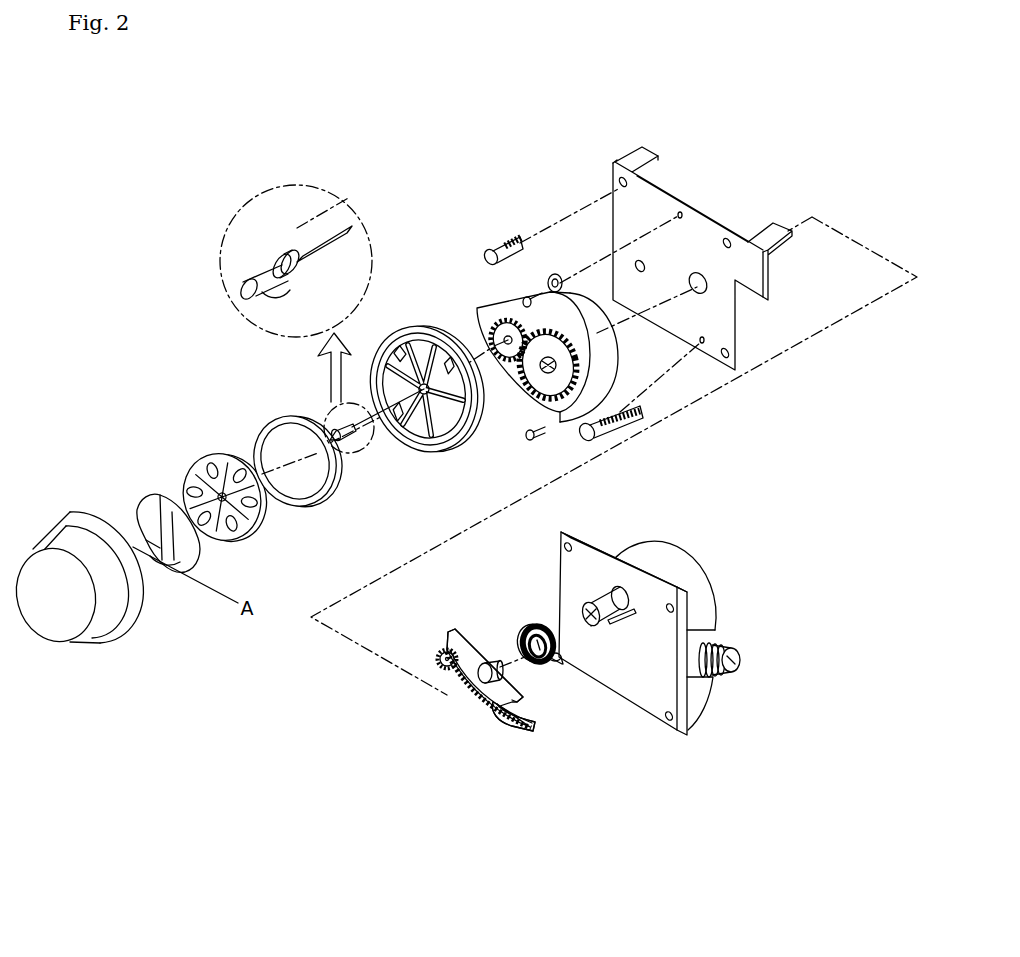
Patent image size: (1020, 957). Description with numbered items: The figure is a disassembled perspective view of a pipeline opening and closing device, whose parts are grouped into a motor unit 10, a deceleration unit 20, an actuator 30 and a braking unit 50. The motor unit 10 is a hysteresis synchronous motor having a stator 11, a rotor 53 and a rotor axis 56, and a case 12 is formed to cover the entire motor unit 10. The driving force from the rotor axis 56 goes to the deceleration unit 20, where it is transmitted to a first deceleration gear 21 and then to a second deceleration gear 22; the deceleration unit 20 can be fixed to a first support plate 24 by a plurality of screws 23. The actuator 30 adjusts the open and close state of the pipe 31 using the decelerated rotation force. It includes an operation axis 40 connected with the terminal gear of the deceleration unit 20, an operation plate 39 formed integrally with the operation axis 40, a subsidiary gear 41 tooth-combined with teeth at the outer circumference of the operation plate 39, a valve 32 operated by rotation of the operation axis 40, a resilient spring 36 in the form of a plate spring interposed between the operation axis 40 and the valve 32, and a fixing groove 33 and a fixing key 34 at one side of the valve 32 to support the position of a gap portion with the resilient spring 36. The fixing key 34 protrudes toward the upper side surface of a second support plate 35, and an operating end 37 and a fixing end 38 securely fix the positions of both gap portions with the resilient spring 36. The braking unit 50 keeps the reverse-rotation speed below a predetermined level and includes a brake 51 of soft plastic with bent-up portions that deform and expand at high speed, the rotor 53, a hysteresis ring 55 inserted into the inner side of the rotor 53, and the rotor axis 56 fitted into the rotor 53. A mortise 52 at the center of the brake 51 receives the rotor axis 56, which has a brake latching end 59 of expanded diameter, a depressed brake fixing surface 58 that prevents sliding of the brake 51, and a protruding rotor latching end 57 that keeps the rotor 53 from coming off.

The motor unit 10 is at (427, 362).
The stator 11 is at (449, 448).
The case 12 is at (64, 628).
The deceleration unit 20 is at (620, 294).
The first deceleration gear 21 is at (483, 311).
The second deceleration gear 22 is at (560, 392).
The screws 23 is at (502, 248).
The first support plate 24 is at (633, 160).
The actuator 30 is at (586, 660).
The pipe 31 is at (734, 666).
The valve 32 is at (606, 597).
The fixing groove 33 is at (655, 600).
The fixing key 34 is at (623, 628).
The second support plate 35 is at (688, 730).
The resilient spring 36 is at (540, 627).
The operating end 37 is at (526, 634).
The fixing end 38 is at (562, 660).
The operation plate 39 is at (468, 638).
The operation axis 40 is at (512, 667).
The subsidiary gear 41 is at (440, 656).
The braking unit 50 is at (256, 385).
The brake 51 is at (145, 508).
The mortise 52 is at (158, 550).
The rotor 53 is at (220, 456).
The hysteresis ring 55 is at (291, 418).
The rotor axis 56 is at (368, 432).
The rotor latching end 57 is at (283, 247).
The brake fixing surface 58 is at (343, 454).
The brake latching end 59 is at (242, 287).